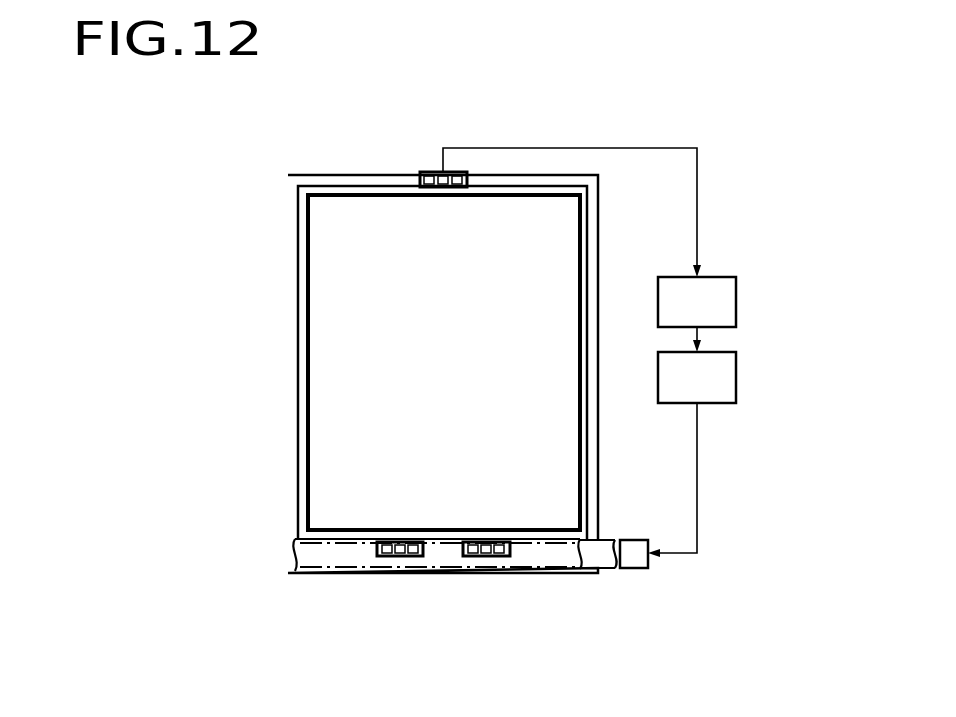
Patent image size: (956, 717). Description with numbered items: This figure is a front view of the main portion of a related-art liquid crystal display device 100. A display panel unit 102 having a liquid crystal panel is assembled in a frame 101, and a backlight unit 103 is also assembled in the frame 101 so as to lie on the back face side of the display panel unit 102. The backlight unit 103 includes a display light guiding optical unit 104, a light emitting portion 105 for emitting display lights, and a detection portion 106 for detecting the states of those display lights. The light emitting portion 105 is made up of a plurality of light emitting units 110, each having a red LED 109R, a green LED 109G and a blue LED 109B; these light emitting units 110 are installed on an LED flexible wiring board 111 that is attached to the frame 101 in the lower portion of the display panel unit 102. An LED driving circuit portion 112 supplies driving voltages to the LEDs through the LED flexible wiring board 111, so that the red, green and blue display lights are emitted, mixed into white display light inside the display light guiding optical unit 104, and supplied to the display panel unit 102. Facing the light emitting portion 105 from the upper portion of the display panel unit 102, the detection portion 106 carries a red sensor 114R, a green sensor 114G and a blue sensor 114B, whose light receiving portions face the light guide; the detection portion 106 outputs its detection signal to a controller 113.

The liquid crystal display device 100 is at (690, 115).
The frame 101 is at (288, 241).
The display panel unit 102 is at (300, 293).
The backlight unit 103 is at (280, 418).
The display light guiding optical unit 104 is at (290, 352).
The light emitting portion 105 is at (506, 590).
The detection portion 106 is at (557, 103).
The red LED 109R is at (375, 548).
The green LED 109G is at (395, 556).
The blue LED 109B is at (417, 556).
The light emitting unit 110 is at (560, 595).
The LED flexible wiring board 111 is at (642, 562).
The LED driving circuit portion 112 is at (736, 376).
The controller 113 is at (736, 300).
The red sensor 114R is at (427, 172).
The green sensor 114G is at (442, 172).
The blue sensor 114B is at (456, 172).